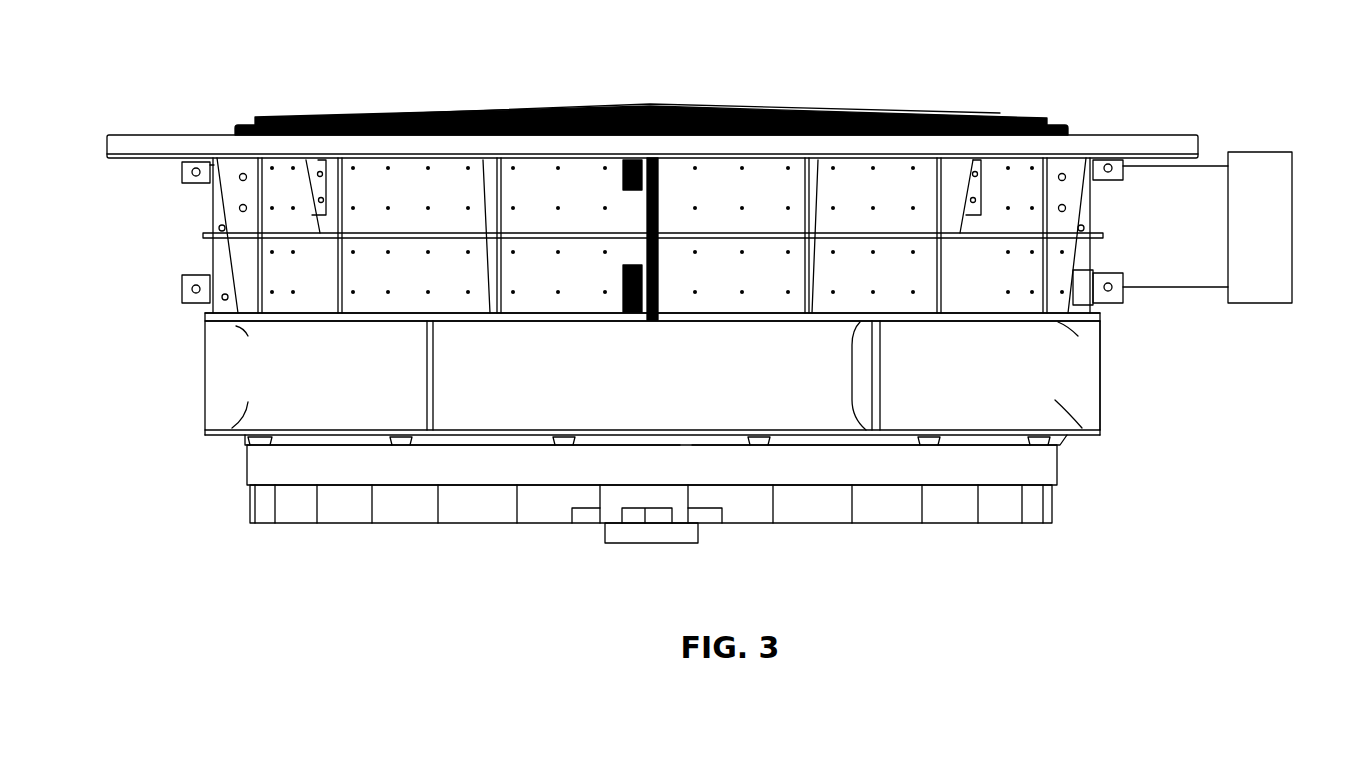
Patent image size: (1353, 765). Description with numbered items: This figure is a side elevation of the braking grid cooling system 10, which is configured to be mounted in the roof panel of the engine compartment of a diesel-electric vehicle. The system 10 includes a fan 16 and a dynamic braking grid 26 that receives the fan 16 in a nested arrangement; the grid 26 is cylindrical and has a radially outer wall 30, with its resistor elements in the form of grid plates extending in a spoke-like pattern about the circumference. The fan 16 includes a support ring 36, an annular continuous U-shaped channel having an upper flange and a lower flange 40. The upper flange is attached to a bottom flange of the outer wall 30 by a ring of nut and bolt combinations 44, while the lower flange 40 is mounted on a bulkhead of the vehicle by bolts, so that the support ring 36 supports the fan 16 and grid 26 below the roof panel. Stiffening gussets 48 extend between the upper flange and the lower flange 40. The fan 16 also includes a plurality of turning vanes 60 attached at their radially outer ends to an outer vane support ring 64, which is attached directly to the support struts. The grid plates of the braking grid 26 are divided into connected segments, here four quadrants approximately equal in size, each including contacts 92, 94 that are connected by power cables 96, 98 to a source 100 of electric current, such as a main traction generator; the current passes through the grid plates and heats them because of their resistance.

The braking grid cooling system 10 is at (700, 73).
The fan 16 is at (693, 374).
The dynamic braking grid 26 is at (1108, 211).
The radially outer wall 30 is at (1025, 170).
The support ring 36 is at (1085, 348).
The lower flange 40 is at (535, 430).
The nut and bolt combinations 44 is at (745, 314).
The stiffening gussets 48 is at (862, 395).
The turning vanes 60 is at (262, 518).
The outer vane support ring 64 is at (1050, 463).
The contact 92 is at (192, 178).
The contact 94 is at (190, 280).
The power cable 96 is at (1205, 166).
The power cable 98 is at (1150, 290).
The source of electric current 100 is at (1265, 297).